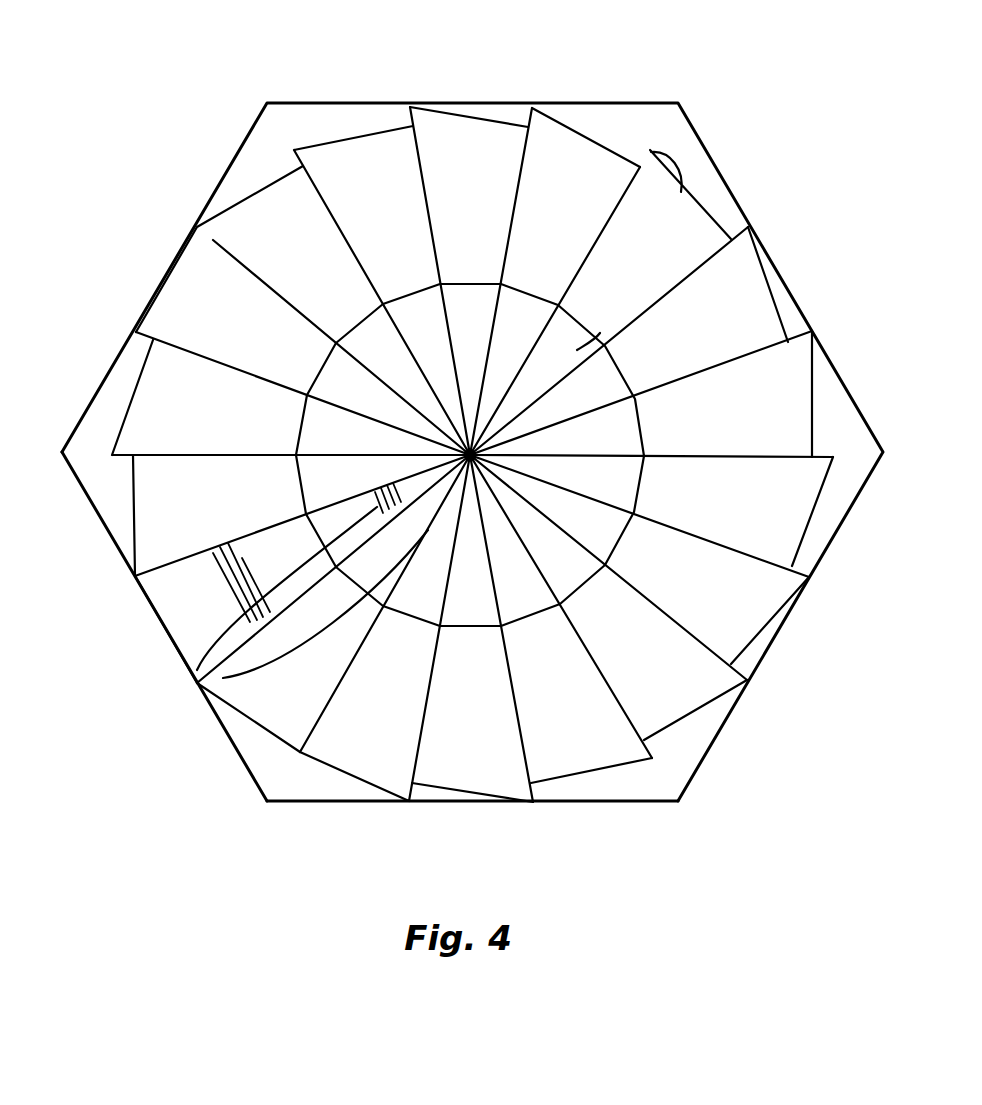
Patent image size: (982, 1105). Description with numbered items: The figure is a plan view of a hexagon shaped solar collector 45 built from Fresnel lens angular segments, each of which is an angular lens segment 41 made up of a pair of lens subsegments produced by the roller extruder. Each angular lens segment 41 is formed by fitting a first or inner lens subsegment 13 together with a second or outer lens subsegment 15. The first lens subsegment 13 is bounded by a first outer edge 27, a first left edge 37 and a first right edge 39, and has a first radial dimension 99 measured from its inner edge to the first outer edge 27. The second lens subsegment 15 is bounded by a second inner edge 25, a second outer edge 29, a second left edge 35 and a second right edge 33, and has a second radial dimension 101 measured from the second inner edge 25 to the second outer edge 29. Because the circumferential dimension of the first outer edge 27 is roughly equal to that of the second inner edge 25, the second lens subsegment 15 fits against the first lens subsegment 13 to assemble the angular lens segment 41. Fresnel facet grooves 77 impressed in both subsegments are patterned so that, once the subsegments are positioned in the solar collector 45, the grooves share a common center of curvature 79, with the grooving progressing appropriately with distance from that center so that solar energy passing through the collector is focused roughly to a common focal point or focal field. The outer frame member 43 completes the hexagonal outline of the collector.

The second radial dimension 101 is at (328, 207).
The first radial dimension 99 is at (393, 322).
The second outer edge 29 is at (650, 150).
The second left edge 35 is at (607, 240).
The second inner edge 25 is at (573, 313).
The second right edge 33 is at (660, 300).
The first outer edge 27 is at (570, 349).
The first left edge 37 is at (530, 418).
The first right edge 39 is at (560, 395).
The common center of curvature 79 is at (430, 442).
The angular lens segment 41 is at (128, 402).
The first lens subsegment 13 is at (333, 530).
The second lens subsegment 15 is at (193, 612).
The Fresnel facet grooves 77 is at (223, 678).
The solar collector 45 is at (248, 752).
The frame base 43 is at (291, 801).